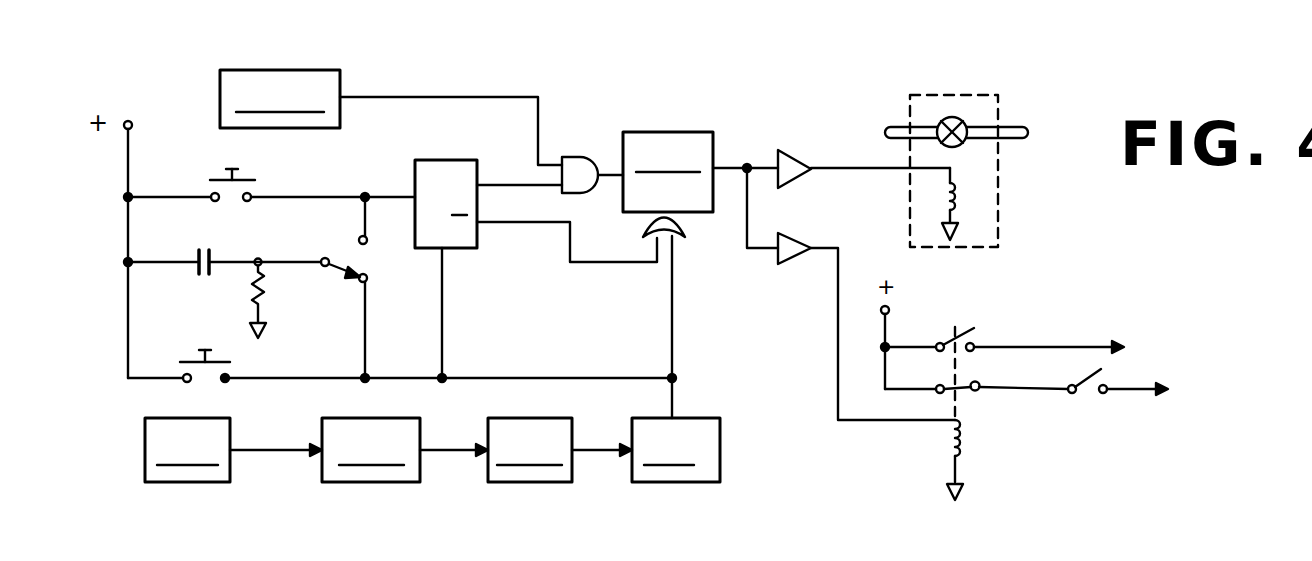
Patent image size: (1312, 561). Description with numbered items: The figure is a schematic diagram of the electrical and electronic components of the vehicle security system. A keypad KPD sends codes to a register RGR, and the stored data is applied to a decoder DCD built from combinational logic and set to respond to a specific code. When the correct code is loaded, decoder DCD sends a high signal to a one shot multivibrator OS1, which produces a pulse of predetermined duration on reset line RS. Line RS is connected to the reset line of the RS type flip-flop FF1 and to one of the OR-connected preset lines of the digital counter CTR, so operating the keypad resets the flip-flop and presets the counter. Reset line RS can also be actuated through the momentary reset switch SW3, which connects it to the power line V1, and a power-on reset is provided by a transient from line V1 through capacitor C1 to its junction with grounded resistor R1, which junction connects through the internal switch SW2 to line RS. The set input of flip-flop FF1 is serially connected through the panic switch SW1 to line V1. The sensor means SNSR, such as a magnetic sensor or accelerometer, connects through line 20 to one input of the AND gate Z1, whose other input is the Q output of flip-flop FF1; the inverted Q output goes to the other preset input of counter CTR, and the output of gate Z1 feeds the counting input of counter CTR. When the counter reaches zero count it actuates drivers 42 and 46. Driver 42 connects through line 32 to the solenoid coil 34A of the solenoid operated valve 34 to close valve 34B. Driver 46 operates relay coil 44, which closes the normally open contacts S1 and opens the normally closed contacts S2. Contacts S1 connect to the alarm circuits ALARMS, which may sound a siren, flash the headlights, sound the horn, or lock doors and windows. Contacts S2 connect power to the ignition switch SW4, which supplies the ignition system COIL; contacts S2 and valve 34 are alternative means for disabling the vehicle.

The line 20 is at (447, 97).
The line 32 is at (880, 170).
The solenoid operated valve 34 is at (984, 161).
The solenoid coil 34A is at (962, 205).
The valve 34B is at (946, 117).
The driver 42 is at (820, 110).
The relay coil 44 is at (948, 446).
The driver 46 is at (782, 265).
The power line V1 is at (142, 92).
The sensor means SNSR is at (280, 99).
The panic switch SW1 is at (246, 180).
The internal switch SW2 is at (349, 244).
The momentary reset switch SW3 is at (213, 325).
The ignition switch SW4 is at (1088, 392).
The capacitor C1 is at (208, 249).
The grounded resistor R1 is at (270, 283).
The RS type flip-flop FF1 is at (455, 160).
The AND gate Z1 is at (585, 157).
The digital counter CTR is at (668, 184).
The reset line RS is at (601, 378).
The keypad KPD is at (187, 450).
The register RGR is at (371, 450).
The decoder DCD is at (530, 450).
The one shot multivibrator OS1 is at (676, 450).
The normally open relay contacts S1 is at (971, 329).
The normally closed relay contacts S2 is at (965, 396).
The alarm circuits ALARMS is at (1099, 334).
The ignition coil COIL is at (1170, 378).